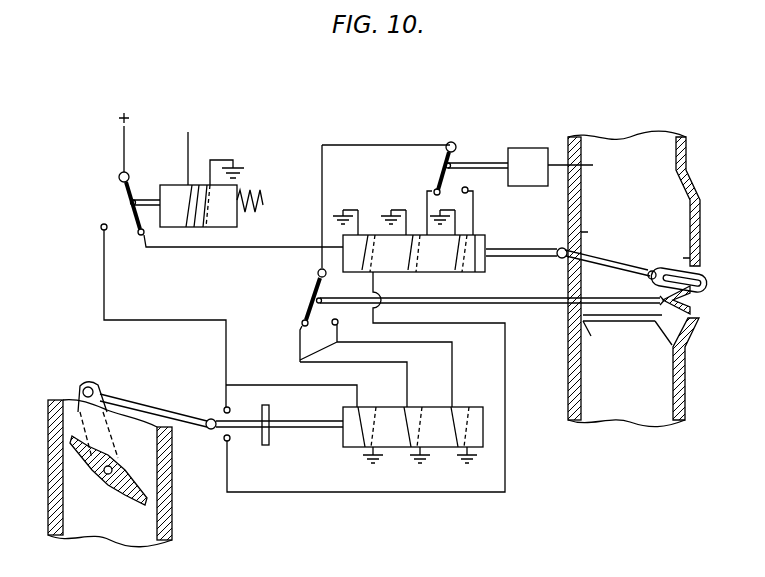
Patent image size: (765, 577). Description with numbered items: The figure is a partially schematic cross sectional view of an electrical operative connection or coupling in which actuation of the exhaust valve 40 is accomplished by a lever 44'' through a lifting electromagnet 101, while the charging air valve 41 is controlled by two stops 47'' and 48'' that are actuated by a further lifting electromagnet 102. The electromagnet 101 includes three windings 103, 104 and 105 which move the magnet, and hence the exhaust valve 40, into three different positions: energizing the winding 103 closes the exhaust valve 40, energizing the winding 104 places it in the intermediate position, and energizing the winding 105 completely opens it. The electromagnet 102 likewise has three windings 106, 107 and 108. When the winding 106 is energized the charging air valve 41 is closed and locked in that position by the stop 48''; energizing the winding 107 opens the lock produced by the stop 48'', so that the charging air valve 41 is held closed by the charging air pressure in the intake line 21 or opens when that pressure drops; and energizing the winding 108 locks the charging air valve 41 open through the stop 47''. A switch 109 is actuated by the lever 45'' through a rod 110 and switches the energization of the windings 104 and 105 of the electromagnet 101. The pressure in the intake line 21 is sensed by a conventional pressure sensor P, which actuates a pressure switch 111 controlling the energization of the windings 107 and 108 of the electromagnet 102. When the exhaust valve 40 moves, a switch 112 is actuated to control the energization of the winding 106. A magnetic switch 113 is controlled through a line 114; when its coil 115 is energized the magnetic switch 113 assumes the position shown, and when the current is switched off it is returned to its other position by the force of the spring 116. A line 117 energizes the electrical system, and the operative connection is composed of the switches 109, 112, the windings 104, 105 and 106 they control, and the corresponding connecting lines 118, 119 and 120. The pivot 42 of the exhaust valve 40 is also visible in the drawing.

The line 117 is at (124, 150).
The magnetic switch 113 is at (145, 168).
The line 114 is at (189, 142).
The coil 115 is at (205, 210).
The spring 116 is at (255, 195).
The pressure switch 111 is at (468, 151).
The winding 106 is at (348, 248).
The winding 107 is at (408, 250).
The winding 108 is at (484, 247).
The lifting electromagnet 102 is at (443, 272).
The switch 109 is at (302, 296).
The connecting line 118 is at (300, 333).
The connecting line 119 is at (300, 353).
The rod 110 is at (516, 304).
The intake line 21 is at (641, 182).
The stop 47'' is at (603, 252).
The stop 48'' is at (692, 273).
The lever 45'' is at (698, 312).
The charging air valve 41 is at (636, 322).
The lever 44'' is at (113, 391).
The pivot pin 42 is at (104, 472).
The exhaust valve 40 is at (112, 480).
The switch 112 is at (244, 432).
The lifting electromagnet 101 is at (345, 447).
The winding 103 is at (376, 430).
The winding 104 is at (422, 430).
The winding 105 is at (468, 430).
The connecting line 120 is at (505, 467).